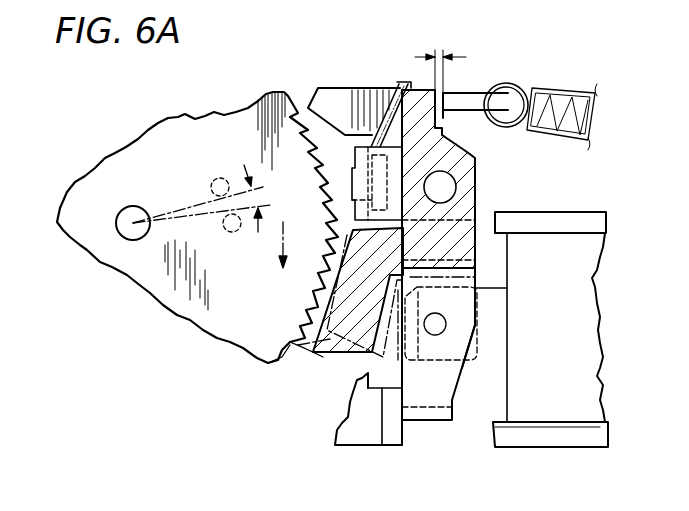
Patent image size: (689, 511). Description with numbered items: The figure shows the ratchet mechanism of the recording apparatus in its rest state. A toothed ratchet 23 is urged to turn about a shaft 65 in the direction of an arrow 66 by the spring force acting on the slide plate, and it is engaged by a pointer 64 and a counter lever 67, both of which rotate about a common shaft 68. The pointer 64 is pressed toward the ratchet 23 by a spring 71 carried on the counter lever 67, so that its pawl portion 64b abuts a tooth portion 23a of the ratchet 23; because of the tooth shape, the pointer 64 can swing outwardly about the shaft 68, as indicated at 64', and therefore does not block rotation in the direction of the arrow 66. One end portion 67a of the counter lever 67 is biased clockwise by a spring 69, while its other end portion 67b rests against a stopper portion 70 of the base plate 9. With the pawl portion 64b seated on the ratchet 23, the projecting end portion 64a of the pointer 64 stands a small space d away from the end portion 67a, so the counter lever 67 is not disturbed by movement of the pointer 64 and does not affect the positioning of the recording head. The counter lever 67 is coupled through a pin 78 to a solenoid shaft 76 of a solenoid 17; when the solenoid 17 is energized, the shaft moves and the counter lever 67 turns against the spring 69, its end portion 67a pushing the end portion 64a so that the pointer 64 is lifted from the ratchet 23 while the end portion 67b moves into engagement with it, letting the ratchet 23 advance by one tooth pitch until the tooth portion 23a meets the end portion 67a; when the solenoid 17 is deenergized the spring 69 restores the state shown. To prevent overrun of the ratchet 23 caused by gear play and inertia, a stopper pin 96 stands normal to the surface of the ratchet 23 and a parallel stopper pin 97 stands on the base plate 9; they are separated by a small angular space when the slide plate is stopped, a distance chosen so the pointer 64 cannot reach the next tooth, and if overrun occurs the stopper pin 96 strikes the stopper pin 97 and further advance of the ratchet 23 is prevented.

The base plate 9 is at (357, 448).
The solenoid 17 is at (587, 282).
The ratchet 23 is at (223, 342).
The tooth portion 23a is at (270, 366).
The pointer 64 is at (354, 309).
The pointer in outwardly moved position 64' is at (350, 325).
The end portion of the pointer 64a is at (415, 88).
The pawl portion 64b is at (297, 350).
The shaft 65 is at (122, 242).
The arrow 66 is at (280, 258).
The counter lever 67 is at (352, 93).
The end portion of the counter lever 67a is at (310, 100).
The end portion of the counter lever 67b is at (438, 421).
The shaft 68 is at (450, 188).
The spring 69 is at (569, 89).
The stopper portion 70 is at (388, 446).
The spring 71 is at (398, 83).
The solenoid shaft 76 is at (495, 350).
The pin 78 is at (436, 336).
The stopper pin 96 is at (221, 178).
The stopper pin 97 is at (227, 233).
The space d is at (443, 65).